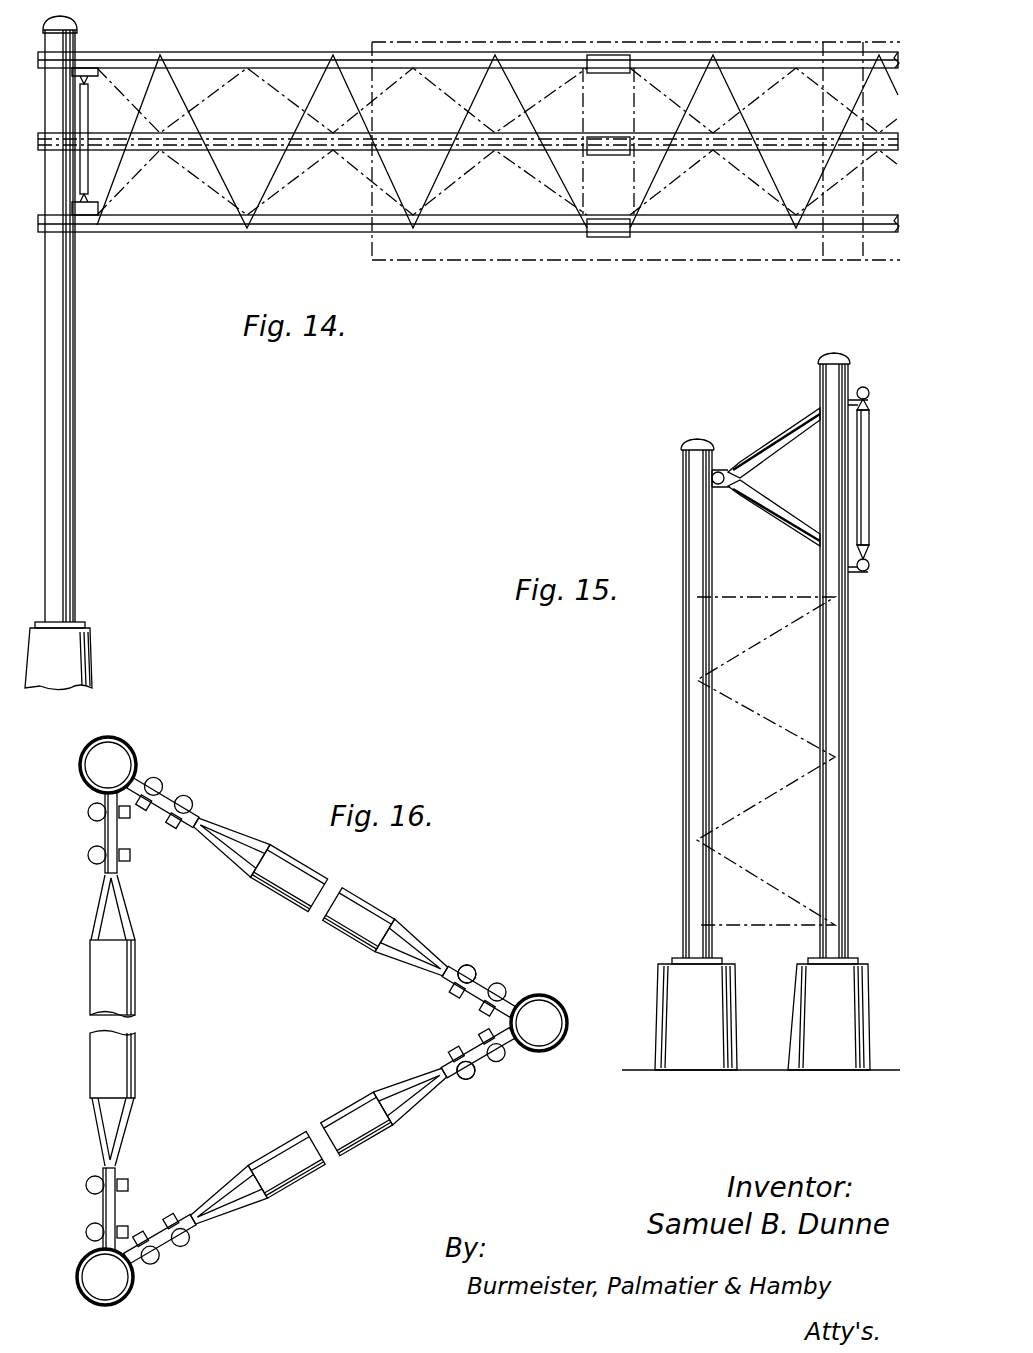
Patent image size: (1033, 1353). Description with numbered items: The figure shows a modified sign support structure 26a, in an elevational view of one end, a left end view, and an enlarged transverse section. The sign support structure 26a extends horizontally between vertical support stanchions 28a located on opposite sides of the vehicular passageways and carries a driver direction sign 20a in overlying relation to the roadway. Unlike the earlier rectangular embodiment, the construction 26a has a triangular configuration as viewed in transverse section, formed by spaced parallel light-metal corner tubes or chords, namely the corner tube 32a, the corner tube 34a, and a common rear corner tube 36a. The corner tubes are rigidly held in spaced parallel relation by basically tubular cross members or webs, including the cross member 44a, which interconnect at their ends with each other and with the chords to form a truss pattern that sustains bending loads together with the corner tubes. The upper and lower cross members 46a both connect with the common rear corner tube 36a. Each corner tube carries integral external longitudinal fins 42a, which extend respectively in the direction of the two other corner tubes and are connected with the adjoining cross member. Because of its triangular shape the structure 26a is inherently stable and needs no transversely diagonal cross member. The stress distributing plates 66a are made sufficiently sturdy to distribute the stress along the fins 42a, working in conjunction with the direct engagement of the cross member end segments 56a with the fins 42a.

In FIG. 14, the driver direction sign 20a is at (552, 260).
In FIG. 14, the sign support structure 26a is at (312, 52).
In FIG. 14, the vertical support stanchion 28a is at (75, 455).
In FIG. 15, the vertical support stanchion 28a is at (683, 748).
In FIG. 14, the corner tube 32a is at (285, 232).
In FIG. 16, the corner tube 32a is at (125, 1297).
In FIG. 14, the corner tube 34a is at (200, 52).
In FIG. 16, the corner tube 34a is at (130, 748).
In FIG. 15, the rear corner tube 36a is at (720, 470).
In FIG. 16, the rear corner tube 36a is at (556, 1000).
In FIG. 16, the fin 42a is at (104, 822).
In FIG. 14, the cross member 44a is at (88, 178).
In FIG. 15, the cross member 44a is at (882, 455).
In FIG. 16, the cross member 44a is at (92, 988).
In FIG. 15, the cross member 46a is at (790, 432).
In FIG. 16, the cross member 46a is at (380, 912).
In FIG. 16, the cross member end segment 56a is at (475, 1002).
In FIG. 16, the stress distributing plate 66a is at (488, 1062).